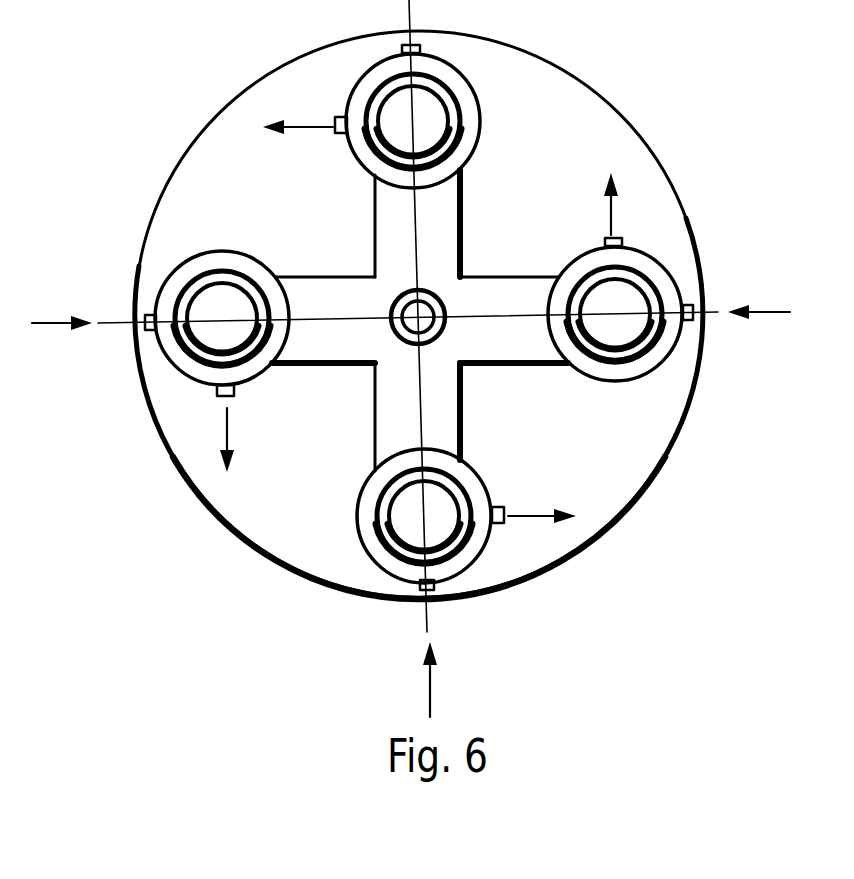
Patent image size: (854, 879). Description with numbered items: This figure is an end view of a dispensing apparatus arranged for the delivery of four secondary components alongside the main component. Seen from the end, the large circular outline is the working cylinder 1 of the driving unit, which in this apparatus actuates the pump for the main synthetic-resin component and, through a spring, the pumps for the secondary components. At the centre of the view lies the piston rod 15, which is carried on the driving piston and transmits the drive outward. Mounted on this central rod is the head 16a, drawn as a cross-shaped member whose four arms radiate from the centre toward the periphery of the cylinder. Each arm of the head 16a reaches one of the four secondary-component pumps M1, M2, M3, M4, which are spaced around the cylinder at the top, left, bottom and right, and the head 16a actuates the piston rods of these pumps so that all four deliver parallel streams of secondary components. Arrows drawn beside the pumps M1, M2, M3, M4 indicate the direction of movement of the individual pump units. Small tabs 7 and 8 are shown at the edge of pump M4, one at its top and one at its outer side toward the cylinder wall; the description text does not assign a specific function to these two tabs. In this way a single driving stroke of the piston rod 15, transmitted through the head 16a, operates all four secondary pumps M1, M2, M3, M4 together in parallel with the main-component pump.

The working cylinder 1 is at (618, 492).
The terminal tab of motor 7 is at (688, 323).
The terminal tab of motor 8 is at (634, 216).
The piston rod 15 is at (424, 326).
The head 16a is at (331, 353).
The pump M1 is at (463, 94).
The pump M2 is at (193, 363).
The pump M3 is at (468, 548).
The pump M4 is at (624, 372).